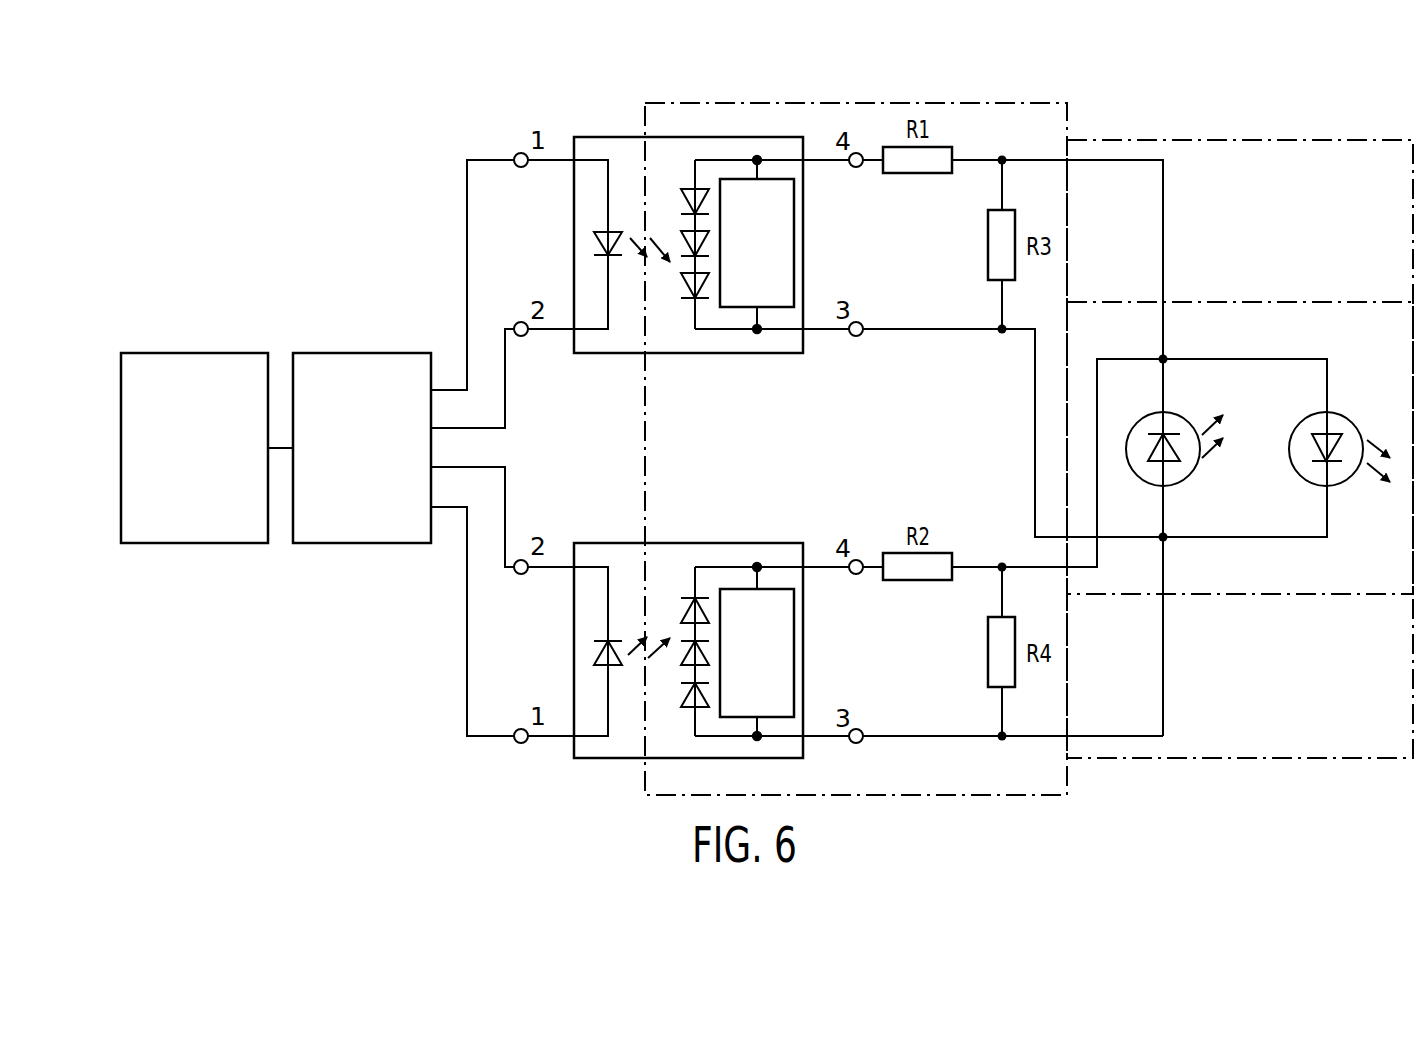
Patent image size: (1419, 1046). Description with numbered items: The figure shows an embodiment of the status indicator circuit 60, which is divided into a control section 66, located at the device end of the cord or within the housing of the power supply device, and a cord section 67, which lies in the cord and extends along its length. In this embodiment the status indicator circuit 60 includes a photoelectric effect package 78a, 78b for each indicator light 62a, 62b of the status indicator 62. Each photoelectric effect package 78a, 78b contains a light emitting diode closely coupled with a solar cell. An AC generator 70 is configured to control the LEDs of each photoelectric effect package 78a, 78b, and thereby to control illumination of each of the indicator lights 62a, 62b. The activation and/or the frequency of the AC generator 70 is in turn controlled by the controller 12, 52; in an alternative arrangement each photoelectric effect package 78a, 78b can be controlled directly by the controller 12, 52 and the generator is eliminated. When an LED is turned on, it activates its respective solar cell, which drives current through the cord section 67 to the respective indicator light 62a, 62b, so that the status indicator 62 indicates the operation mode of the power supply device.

The controller 12 is at (199, 429).
The controller 52 is at (194, 353).
The AC generator 70 is at (360, 353).
The photoelectric effect package 78a is at (747, 353).
The photoelectric effect package 78b is at (747, 543).
The control section 66 is at (960, 103).
The cord section 67 is at (1240, 139).
The status indicator 62 is at (1240, 412).
The indicator light 62a is at (1355, 427).
The indicator light 62b is at (1190, 420).
The status indicator circuit 60 is at (1290, 88).